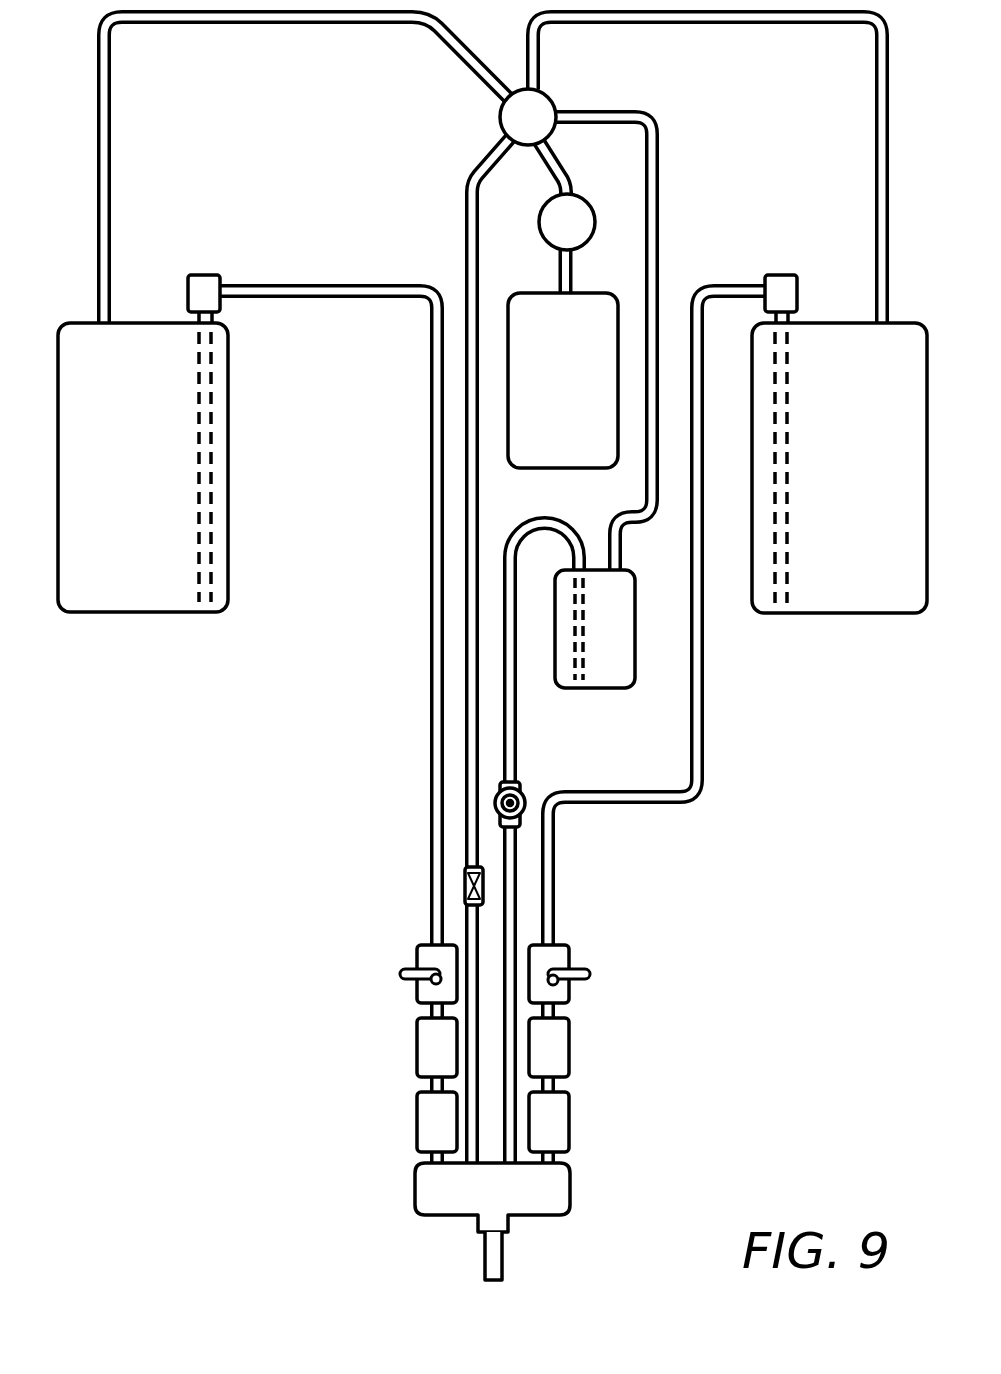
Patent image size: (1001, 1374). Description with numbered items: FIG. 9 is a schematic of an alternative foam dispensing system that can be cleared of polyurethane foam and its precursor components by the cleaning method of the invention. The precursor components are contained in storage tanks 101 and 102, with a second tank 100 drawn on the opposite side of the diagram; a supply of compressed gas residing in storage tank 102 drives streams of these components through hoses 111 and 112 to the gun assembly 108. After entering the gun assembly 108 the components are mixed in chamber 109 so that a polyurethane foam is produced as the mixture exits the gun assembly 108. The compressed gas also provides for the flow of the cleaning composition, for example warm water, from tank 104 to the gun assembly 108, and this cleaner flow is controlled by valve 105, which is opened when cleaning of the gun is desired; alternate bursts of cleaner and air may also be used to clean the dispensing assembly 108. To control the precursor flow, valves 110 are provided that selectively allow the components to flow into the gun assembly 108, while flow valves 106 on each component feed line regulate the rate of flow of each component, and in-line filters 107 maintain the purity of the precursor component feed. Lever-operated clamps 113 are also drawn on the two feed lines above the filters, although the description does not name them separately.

The first solution bag 100 is at (147, 466).
The storage tank 101 is at (860, 468).
The storage tank 102 is at (566, 392).
The tank 104 is at (618, 641).
The valve 105 is at (520, 792).
The flow valve 106 is at (428, 1120).
The in-line filter 107 is at (430, 1042).
The gun assembly 108 is at (417, 1190).
The chamber 109 is at (490, 1253).
The valve 110 is at (465, 885).
The hose 111 is at (702, 737).
The hose 112 is at (432, 837).
The lever clamp 113 is at (422, 960).